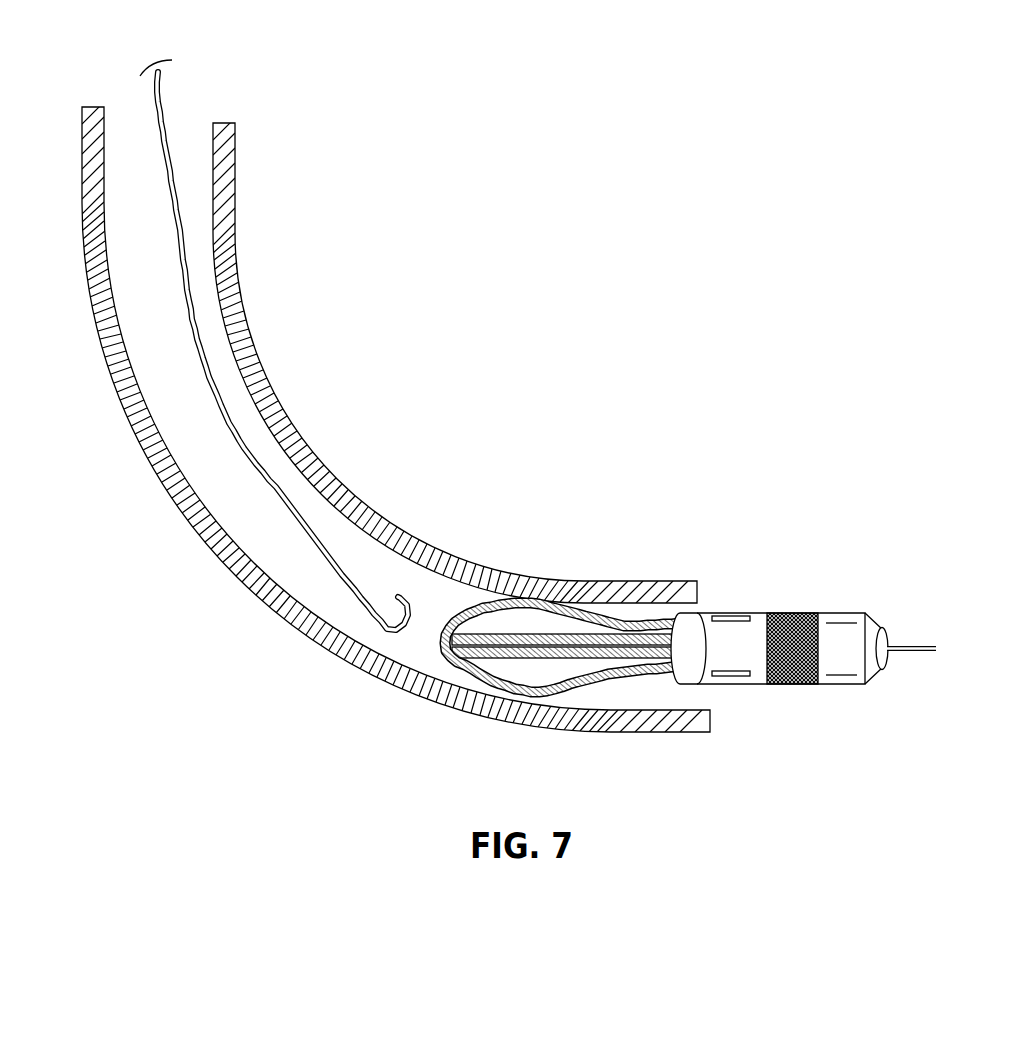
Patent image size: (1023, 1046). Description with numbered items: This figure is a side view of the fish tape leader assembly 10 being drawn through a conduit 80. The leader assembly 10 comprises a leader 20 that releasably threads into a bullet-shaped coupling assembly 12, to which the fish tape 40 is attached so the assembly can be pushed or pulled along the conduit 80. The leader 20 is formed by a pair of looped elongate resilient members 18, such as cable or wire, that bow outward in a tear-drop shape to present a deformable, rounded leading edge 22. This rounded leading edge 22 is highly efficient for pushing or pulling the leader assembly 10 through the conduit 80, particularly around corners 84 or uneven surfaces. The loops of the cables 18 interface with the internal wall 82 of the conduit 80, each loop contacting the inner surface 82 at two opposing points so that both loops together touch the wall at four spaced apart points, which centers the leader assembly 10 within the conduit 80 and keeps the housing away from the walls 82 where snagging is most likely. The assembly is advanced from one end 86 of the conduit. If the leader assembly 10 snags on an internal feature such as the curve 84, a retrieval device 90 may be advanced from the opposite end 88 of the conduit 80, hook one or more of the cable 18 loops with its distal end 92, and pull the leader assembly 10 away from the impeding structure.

The fish tape leader assembly 10 is at (677, 610).
The coupling assembly 12 is at (833, 627).
The looped elongate resilient members 18 is at (457, 680).
The leader 20 is at (574, 608).
The leading edge 22 is at (437, 642).
The fish tape 40 is at (937, 650).
The conduit 80 is at (455, 342).
The internal wall 82 is at (444, 454).
The corner 84 is at (444, 454).
The end of conduit 86 is at (714, 728).
The opposite end 88 is at (227, 123).
The retrieval device 90 is at (235, 383).
The distal end 92 is at (384, 630).